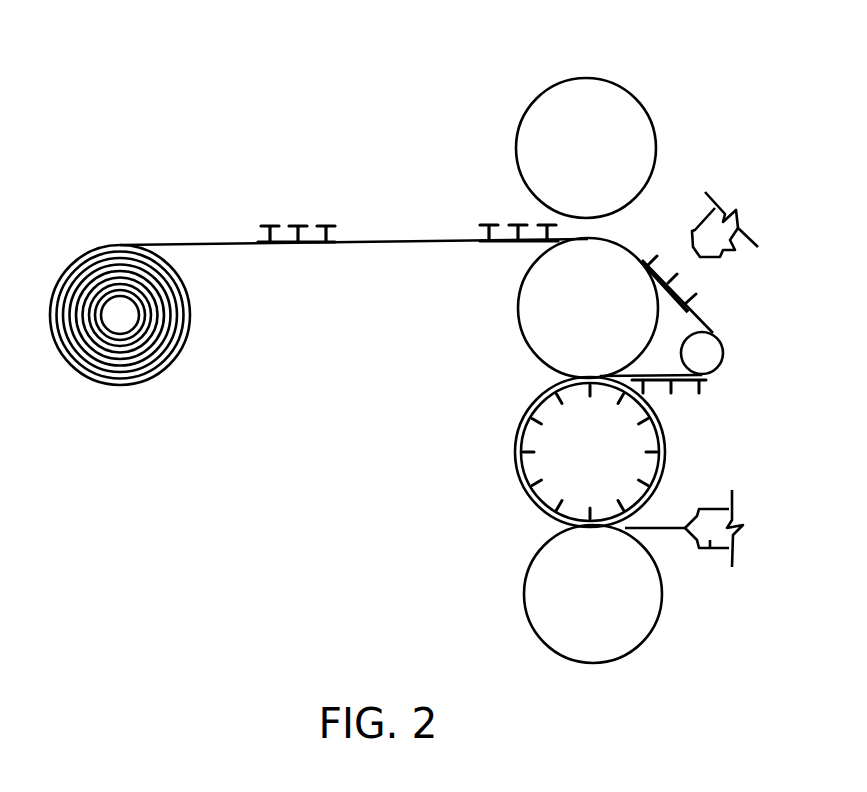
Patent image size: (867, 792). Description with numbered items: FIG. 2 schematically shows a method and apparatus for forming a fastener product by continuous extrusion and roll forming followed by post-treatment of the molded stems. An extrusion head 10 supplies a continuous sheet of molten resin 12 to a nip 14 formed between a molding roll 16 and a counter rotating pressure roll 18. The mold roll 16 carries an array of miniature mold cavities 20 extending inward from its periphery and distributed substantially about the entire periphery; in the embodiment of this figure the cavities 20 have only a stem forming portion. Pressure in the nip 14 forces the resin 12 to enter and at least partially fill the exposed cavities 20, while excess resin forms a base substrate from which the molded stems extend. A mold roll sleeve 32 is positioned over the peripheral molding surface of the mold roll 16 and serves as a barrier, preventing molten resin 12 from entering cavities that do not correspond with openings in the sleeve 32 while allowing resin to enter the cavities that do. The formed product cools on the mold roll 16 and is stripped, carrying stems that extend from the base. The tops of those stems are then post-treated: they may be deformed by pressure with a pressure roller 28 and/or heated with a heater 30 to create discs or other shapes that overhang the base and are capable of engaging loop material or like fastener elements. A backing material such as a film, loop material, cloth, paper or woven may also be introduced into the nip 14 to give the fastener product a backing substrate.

The extrusion head 10 is at (710, 549).
The molten resin 12 is at (655, 528).
The nip 14 is at (656, 541).
The molding roll 16 is at (497, 421).
The pressure roll 18 is at (548, 600).
The mold cavities 20 is at (540, 501).
The pressure roller 28 is at (582, 97).
The heater 30 is at (737, 254).
The mold roll sleeve 32 is at (528, 408).